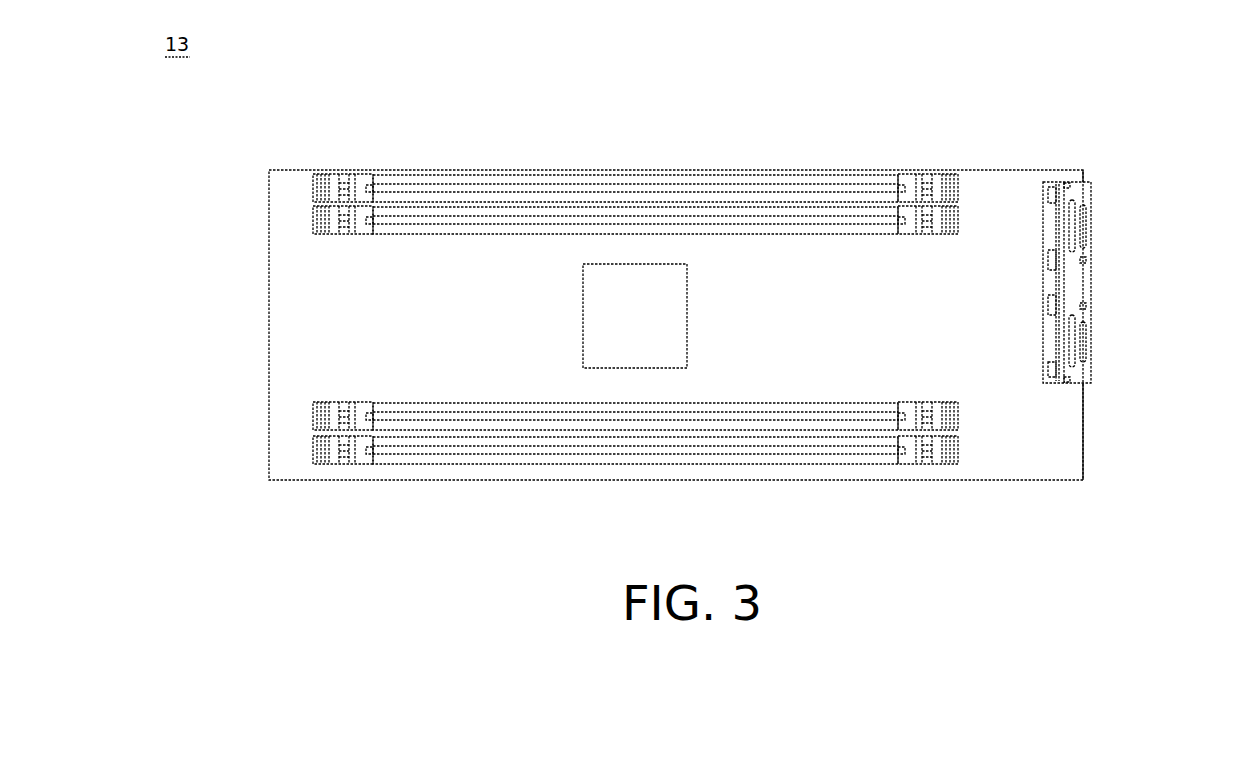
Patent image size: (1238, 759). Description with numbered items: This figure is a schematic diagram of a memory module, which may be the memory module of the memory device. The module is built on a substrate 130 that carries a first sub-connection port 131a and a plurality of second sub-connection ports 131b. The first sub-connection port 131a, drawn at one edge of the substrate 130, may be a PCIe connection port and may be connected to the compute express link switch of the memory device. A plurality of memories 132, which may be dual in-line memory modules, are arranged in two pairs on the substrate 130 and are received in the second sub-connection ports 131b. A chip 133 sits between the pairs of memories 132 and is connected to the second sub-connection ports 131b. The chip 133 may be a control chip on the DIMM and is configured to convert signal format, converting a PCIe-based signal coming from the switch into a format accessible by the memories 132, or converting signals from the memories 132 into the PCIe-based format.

The substrate 130 is at (316, 299).
The first sub-connection port 131a is at (1082, 277).
The second sub-connection ports 131b is at (942, 188).
The memories 132 is at (518, 185).
The chip 133 is at (672, 340).